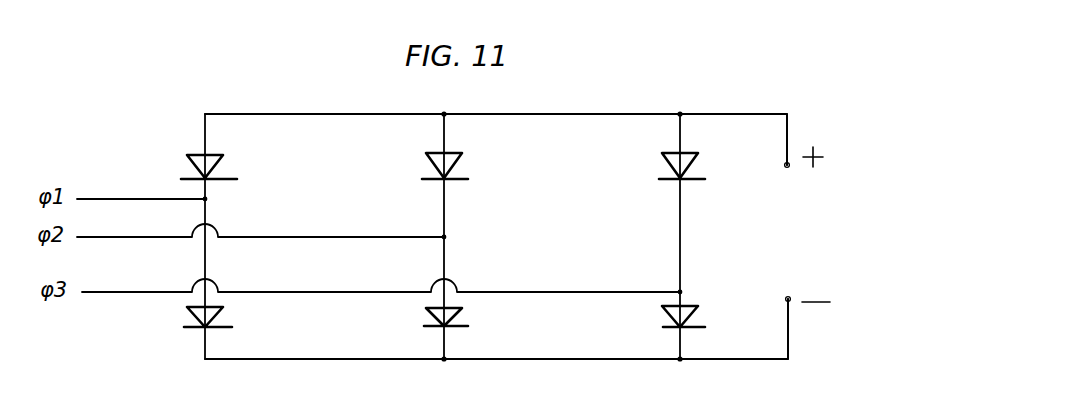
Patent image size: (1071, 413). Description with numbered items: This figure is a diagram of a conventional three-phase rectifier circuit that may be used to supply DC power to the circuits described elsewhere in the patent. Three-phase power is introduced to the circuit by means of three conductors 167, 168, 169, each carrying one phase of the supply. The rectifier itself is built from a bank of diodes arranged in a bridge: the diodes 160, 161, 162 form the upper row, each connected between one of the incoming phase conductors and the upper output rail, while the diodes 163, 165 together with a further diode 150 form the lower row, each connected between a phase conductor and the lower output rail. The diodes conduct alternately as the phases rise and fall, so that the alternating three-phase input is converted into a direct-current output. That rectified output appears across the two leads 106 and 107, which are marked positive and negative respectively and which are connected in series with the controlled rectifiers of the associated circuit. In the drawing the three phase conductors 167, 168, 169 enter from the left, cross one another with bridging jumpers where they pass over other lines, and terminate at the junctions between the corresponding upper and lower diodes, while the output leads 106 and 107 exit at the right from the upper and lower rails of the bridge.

The lead 106 is at (787, 133).
The lead 107 is at (788, 338).
The rectifier diode 150 is at (462, 313).
The diode 160 is at (216, 166).
The diode 161 is at (452, 166).
The diode 162 is at (691, 160).
The diode 163 is at (232, 318).
The diode 165 is at (688, 316).
The conductor 167 is at (110, 199).
The conductor 168 is at (162, 237).
The conductor 169 is at (152, 292).